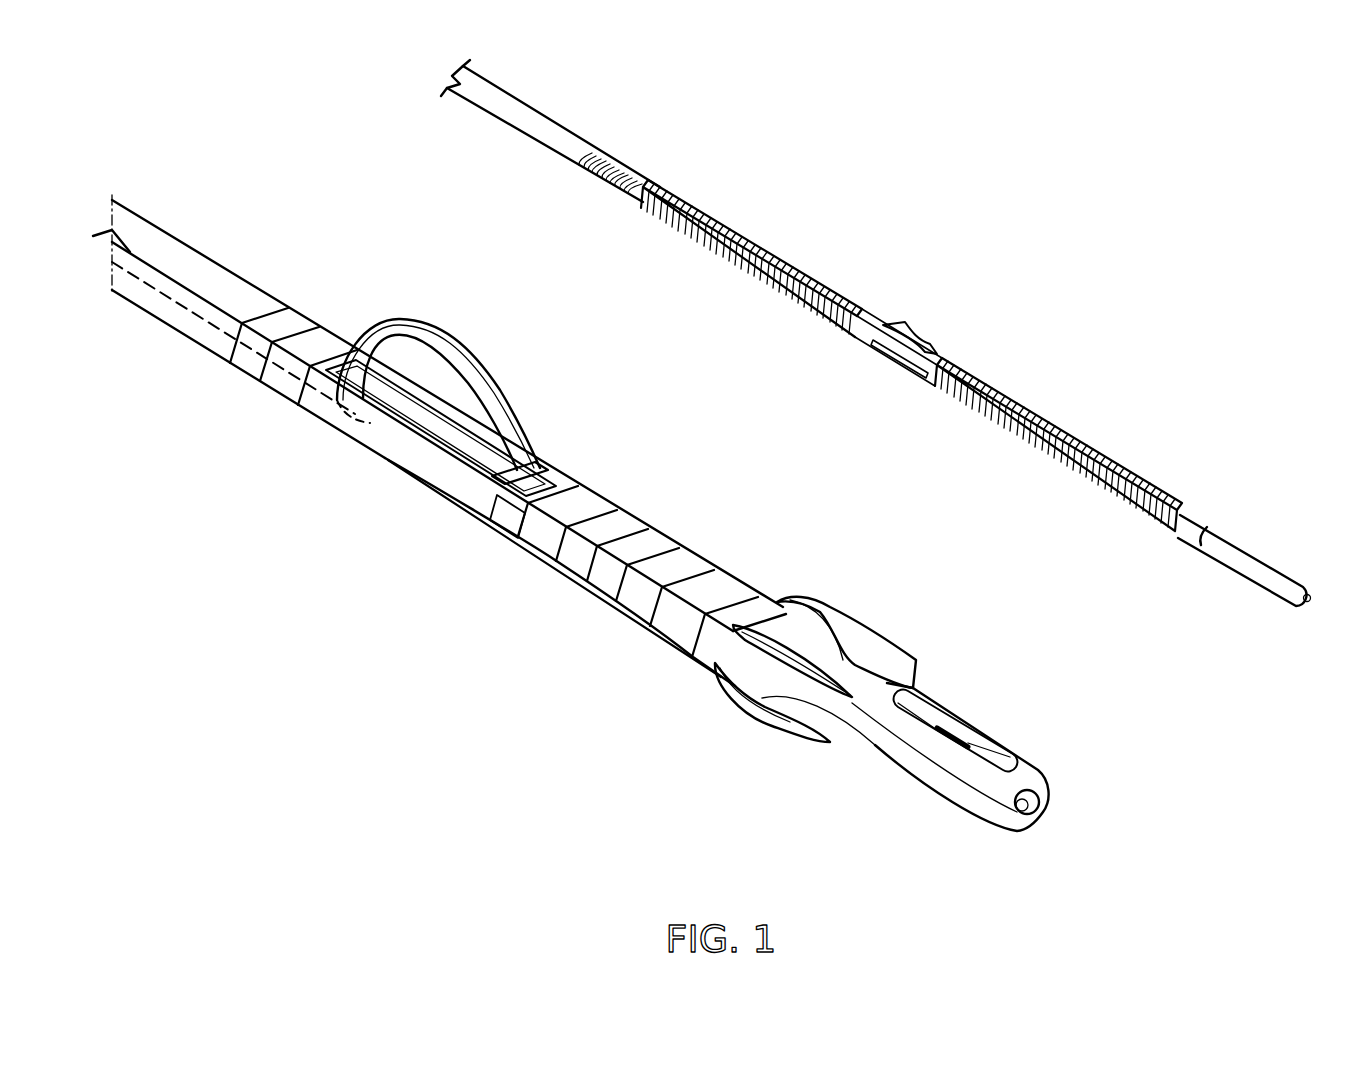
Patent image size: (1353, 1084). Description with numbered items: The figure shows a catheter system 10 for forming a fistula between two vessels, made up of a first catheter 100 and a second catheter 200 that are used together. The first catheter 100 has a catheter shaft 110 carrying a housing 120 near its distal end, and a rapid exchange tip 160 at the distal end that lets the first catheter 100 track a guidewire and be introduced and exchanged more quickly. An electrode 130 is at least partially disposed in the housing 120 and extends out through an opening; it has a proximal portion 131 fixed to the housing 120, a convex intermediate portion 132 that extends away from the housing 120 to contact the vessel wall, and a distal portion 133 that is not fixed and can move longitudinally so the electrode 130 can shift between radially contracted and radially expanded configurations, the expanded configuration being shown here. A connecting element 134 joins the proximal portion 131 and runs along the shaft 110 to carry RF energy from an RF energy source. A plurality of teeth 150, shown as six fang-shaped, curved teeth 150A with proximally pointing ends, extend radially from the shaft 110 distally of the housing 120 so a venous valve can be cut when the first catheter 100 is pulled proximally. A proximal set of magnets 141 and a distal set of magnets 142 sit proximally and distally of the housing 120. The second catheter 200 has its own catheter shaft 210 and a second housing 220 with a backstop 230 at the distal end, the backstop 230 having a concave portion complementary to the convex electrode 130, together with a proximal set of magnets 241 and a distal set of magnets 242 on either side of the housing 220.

The catheter system 10 is at (258, 126).
The first catheter 100 is at (347, 263).
The catheter shaft 110 is at (205, 282).
The housing 120 is at (390, 457).
The electrode 130 is at (442, 321).
The proximal portion 131 is at (345, 405).
The intermediate portion 132 is at (475, 360).
The distal portion 133 is at (540, 466).
The connecting element 134 is at (170, 312).
The proximal set of magnets 141 is at (247, 373).
The distal set of magnets 142 is at (568, 586).
The plurality of teeth 150 is at (868, 611).
The teeth 150A is at (810, 592).
The rapid exchange tip 160 is at (998, 748).
The second catheter 200 is at (788, 215).
The catheter shaft 210 is at (518, 118).
The second housing 220 is at (870, 350).
The backstop 230 is at (905, 335).
The proximal set of magnets 241 is at (682, 236).
The distal set of magnets 242 is at (1040, 455).